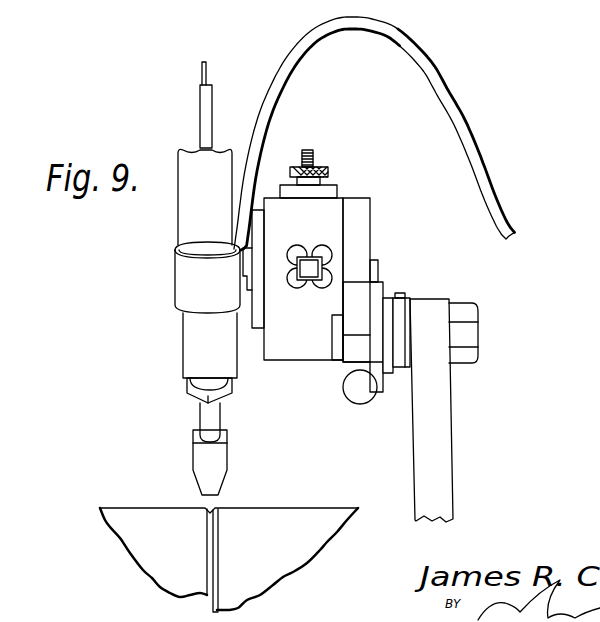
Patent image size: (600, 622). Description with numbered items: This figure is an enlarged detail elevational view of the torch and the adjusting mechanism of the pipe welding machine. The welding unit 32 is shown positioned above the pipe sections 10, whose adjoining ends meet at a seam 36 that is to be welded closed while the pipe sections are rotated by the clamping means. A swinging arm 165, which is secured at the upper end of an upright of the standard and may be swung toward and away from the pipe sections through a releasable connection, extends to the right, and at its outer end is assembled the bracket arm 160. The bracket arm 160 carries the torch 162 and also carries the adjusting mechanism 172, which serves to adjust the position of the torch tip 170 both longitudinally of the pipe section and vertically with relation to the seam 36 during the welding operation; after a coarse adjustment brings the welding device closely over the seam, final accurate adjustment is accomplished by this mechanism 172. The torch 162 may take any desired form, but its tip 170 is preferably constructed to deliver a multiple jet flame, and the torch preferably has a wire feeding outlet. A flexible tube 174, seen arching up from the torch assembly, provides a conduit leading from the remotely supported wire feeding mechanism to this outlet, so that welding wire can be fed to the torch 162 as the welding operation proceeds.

The pipe sections 10 is at (138, 517).
The welding unit 32 is at (175, 302).
The seam 36 is at (207, 540).
The bracket arm 160 is at (397, 385).
The torch 162 is at (192, 357).
The arm 165 is at (448, 447).
The torch tip 170 is at (203, 477).
The adjusting mechanism 172 is at (319, 366).
The flexible tube 174 is at (465, 155).